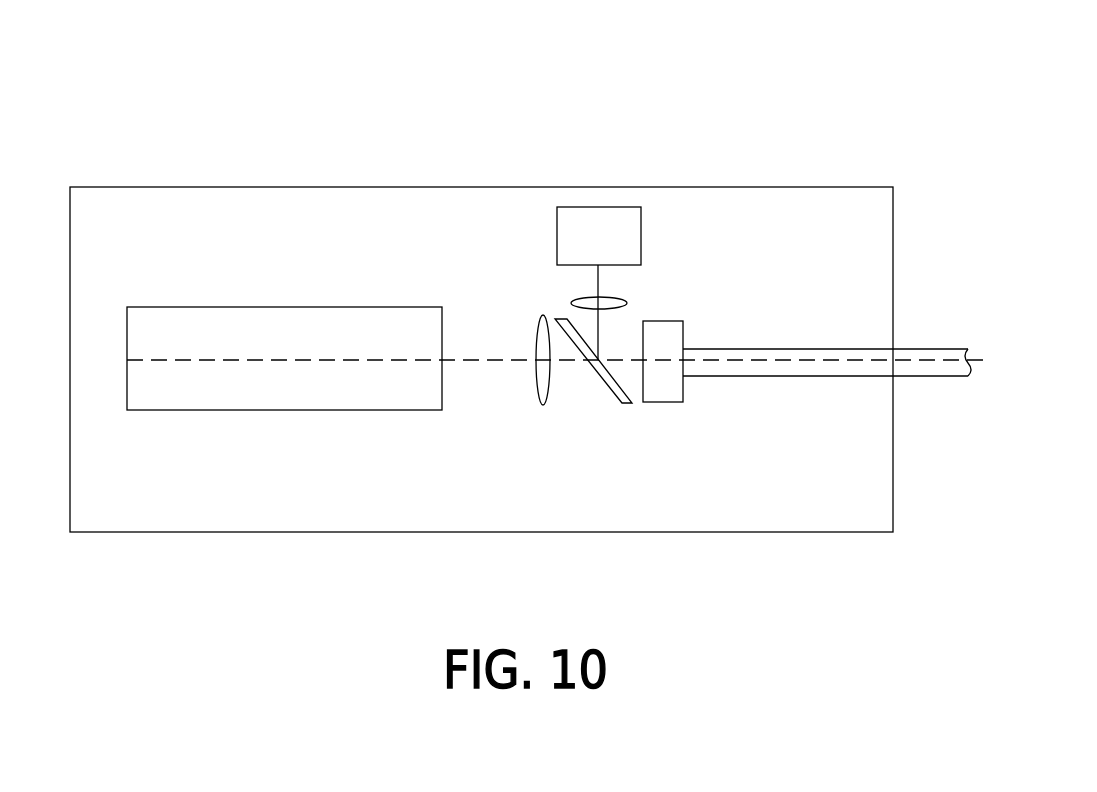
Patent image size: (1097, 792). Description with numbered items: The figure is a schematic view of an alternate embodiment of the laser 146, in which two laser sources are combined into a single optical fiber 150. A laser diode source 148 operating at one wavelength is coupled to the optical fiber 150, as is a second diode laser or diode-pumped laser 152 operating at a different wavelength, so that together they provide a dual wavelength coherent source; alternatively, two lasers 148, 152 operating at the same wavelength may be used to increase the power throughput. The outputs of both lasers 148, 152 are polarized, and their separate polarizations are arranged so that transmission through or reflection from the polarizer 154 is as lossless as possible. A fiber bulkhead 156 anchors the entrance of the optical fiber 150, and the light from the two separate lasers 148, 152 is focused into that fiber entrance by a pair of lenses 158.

The laser 146 is at (767, 118).
The laser diode source 148 is at (587, 245).
The optical fiber 150 is at (935, 377).
The second diode laser or diode-pumped laser 152 is at (223, 307).
The polarizer 154 is at (610, 390).
The fiber bulkhead 156 is at (665, 402).
The lenses 158 is at (568, 302).